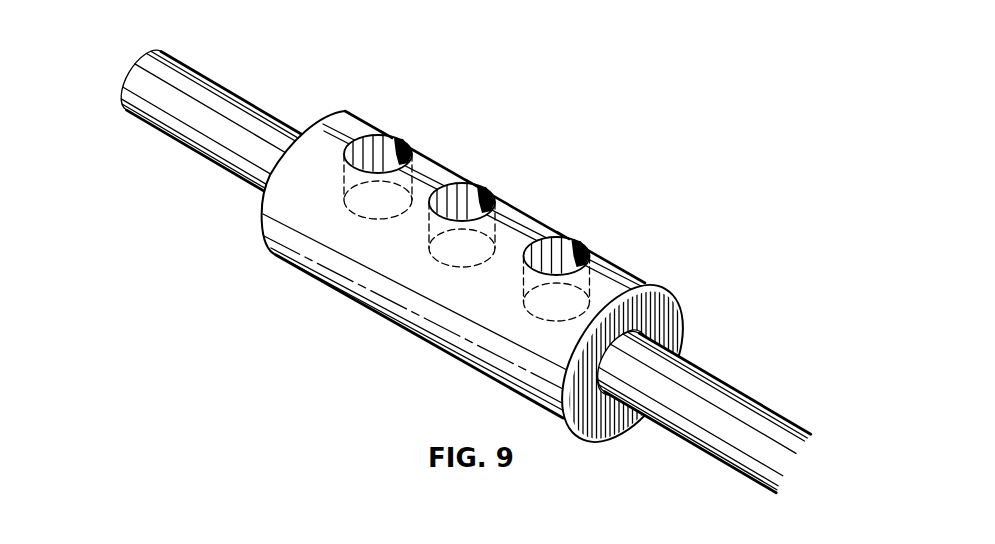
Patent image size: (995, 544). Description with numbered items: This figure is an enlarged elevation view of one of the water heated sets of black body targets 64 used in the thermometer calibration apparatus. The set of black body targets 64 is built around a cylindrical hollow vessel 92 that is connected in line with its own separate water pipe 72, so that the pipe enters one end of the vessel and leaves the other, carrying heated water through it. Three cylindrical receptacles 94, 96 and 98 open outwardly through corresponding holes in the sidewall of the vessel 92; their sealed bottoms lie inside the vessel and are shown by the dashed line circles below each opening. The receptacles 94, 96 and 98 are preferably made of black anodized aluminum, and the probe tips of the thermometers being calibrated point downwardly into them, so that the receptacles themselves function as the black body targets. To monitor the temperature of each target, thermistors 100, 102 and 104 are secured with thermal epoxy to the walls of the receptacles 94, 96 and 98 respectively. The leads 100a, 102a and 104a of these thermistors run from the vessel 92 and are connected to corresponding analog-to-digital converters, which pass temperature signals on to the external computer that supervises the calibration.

The set of black body targets 64 is at (656, 282).
The water pipe 72 is at (260, 110).
The cylindrical hollow vessel 92 is at (383, 324).
The cylindrical receptacle 94 is at (377, 156).
The cylindrical receptacle 96 is at (460, 206).
The cylindrical receptacle 98 is at (546, 262).
The thermistor 100 is at (407, 144).
The thermistor leads 100a is at (386, 135).
The thermistor 102 is at (496, 203).
The thermistor leads 102a is at (472, 183).
The thermistor 104 is at (594, 269).
The thermistor leads 104a is at (563, 236).